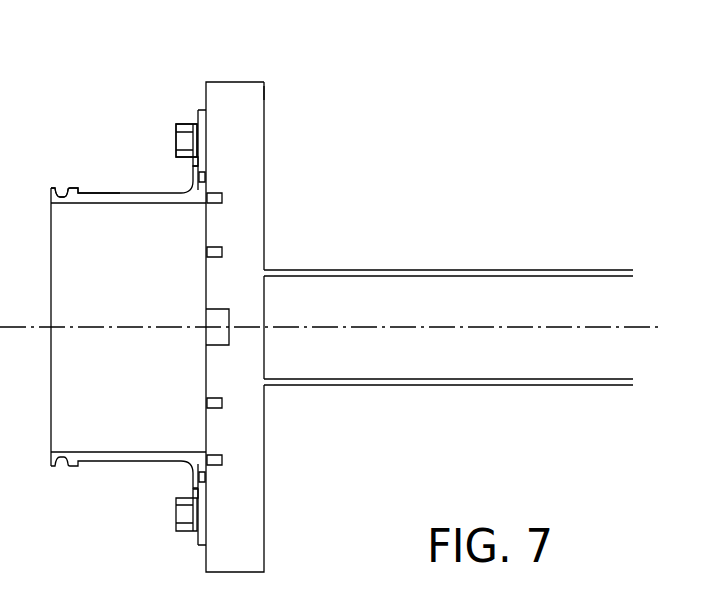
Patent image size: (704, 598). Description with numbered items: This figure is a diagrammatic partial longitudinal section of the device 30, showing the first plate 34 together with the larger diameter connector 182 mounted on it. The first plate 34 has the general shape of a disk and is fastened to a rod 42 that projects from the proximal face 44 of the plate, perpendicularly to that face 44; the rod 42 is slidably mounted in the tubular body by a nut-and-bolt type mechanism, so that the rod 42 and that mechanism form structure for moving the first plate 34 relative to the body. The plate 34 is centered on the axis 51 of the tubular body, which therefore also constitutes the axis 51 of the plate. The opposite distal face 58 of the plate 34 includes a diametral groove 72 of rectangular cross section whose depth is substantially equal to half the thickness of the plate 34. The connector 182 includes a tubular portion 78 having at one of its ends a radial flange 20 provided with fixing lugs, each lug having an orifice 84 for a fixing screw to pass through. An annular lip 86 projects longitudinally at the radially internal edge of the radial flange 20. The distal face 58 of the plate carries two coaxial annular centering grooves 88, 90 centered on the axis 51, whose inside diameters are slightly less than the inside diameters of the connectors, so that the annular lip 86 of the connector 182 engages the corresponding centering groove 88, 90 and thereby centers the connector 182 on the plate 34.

The sensor assembly 30 is at (515, 156).
The first plate 34 is at (235, 77).
The proximal face 44 is at (264, 108).
The rod 42 is at (565, 270).
The axis 51 is at (640, 327).
The distal face 58 is at (205, 93).
The radial flange 20 is at (198, 120).
The orifice 84 is at (188, 138).
The annular centering groove 90 is at (207, 197).
The annular lip 86 is at (222, 198).
The annular centering groove 88 is at (207, 252).
The diametral groove 72 is at (213, 343).
The tubular portion 78 is at (140, 463).
The connector 182 is at (109, 465).